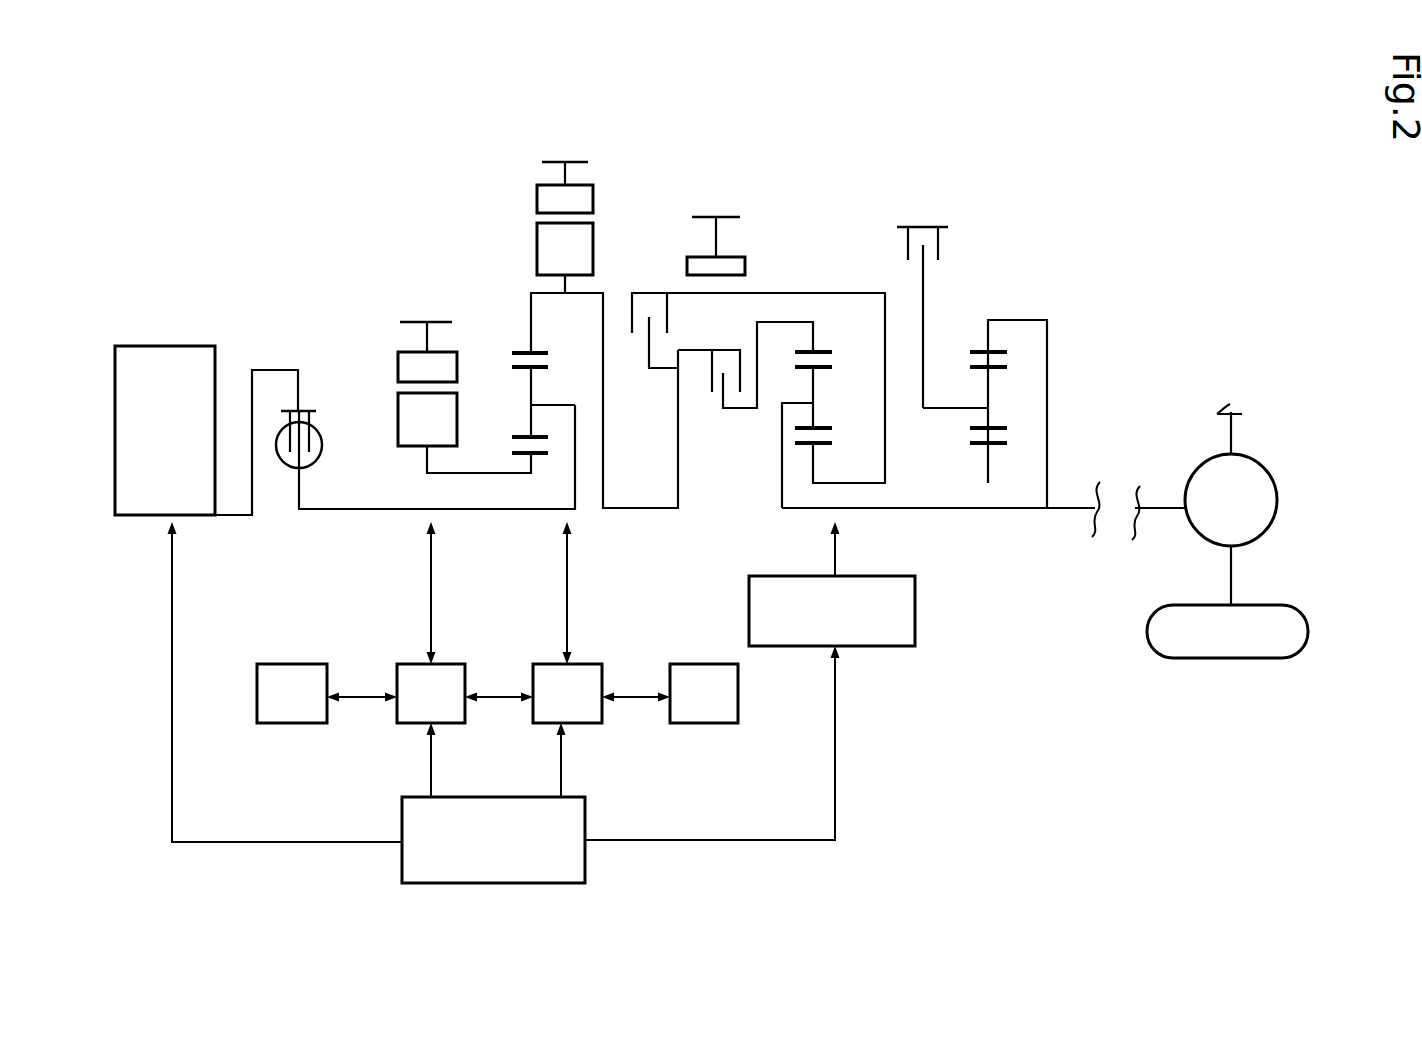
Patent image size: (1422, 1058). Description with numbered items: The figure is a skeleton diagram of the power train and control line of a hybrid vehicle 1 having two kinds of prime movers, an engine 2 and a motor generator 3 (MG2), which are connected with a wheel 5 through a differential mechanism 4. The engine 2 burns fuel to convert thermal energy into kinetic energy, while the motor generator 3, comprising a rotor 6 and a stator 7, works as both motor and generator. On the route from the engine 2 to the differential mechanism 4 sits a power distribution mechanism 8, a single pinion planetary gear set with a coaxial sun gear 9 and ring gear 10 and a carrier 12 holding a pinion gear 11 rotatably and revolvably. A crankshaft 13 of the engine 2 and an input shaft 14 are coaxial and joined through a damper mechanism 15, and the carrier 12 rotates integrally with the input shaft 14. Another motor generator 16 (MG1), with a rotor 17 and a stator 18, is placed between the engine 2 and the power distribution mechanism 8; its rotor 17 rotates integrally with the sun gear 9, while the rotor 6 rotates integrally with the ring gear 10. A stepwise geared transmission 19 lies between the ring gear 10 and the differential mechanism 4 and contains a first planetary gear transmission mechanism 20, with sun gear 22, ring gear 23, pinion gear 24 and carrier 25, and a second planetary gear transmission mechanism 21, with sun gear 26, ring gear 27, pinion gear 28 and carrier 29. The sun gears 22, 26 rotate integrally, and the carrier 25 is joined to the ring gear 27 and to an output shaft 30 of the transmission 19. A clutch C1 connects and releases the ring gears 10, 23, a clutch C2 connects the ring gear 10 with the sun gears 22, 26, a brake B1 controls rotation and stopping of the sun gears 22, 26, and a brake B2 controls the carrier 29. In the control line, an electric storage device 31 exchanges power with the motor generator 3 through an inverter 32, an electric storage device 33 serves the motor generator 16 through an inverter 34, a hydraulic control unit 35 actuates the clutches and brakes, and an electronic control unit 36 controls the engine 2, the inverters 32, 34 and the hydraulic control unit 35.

The vehicle 1 is at (282, 265).
The engine 2 is at (153, 345).
The motor generator 3 is at (563, 198).
The differential mechanism 4 is at (1268, 473).
The wheel 5 is at (1220, 660).
The rotor 6 is at (537, 250).
The stator 7 is at (537, 200).
The power distribution mechanism 8 is at (566, 375).
The sun gear 9 is at (520, 452).
The ring gear 10 is at (545, 356).
The pinion gear 11 is at (520, 358).
The carrier 12 is at (562, 404).
The crankshaft 13 is at (232, 517).
The input shaft 14 is at (363, 511).
The damper mechanism 15 is at (306, 404).
The motor generator 16 is at (427, 359).
The rotor 17 is at (397, 420).
The stator 18 is at (397, 366).
The transmission 19 is at (844, 395).
The first planetary gear transmission mechanism 20 is at (800, 512).
The second planetary gear transmission mechanism 21 is at (996, 517).
The sun gear 22 is at (832, 443).
The ring gear 23 is at (830, 355).
The pinion gear 24 is at (832, 367).
The carrier 25 is at (781, 432).
The sun gear 26 is at (1007, 443).
The ring gear 27 is at (968, 353).
The pinion gear 28 is at (1007, 367).
The carrier 29 is at (945, 409).
The output shaft 30 is at (1072, 506).
The electric storage device 31 is at (705, 662).
The inverter 32 is at (592, 724).
The electric storage device 33 is at (290, 725).
The inverter 34 is at (405, 725).
The hydraulic control unit 35 is at (915, 608).
The electronic control unit 36 is at (490, 885).
The brake B1 is at (716, 234).
The brake B2 is at (922, 303).
The clutch C1 is at (745, 365).
The clutch C2 is at (758, 388).